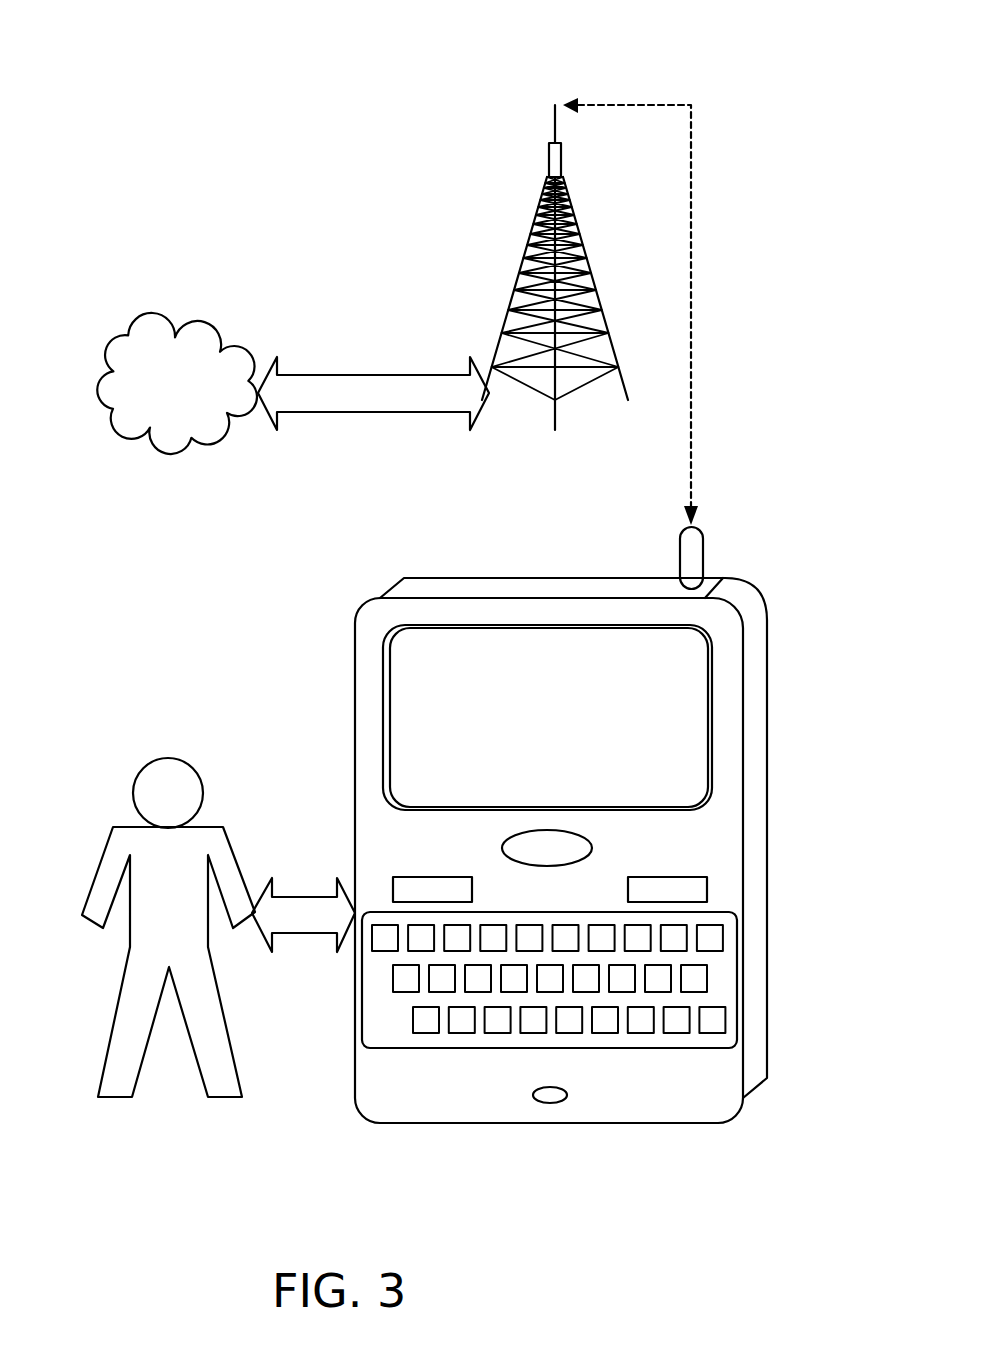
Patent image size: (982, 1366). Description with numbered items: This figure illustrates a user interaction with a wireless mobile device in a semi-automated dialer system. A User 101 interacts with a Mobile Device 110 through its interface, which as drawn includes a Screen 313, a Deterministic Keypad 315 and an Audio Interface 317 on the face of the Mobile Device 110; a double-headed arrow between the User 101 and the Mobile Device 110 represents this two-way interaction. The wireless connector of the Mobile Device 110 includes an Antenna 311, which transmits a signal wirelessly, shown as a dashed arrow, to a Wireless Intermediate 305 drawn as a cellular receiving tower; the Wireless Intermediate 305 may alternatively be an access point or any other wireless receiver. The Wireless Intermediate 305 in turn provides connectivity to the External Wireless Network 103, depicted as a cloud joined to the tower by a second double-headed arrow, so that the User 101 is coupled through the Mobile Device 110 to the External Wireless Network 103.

The wireless intermediate 305 is at (533, 225).
The external wireless network 103 is at (157, 313).
The user 101 is at (212, 823).
The mobile device 110 is at (443, 577).
The antenna 311 is at (680, 546).
The screen 313 is at (713, 705).
The deterministic keypad 315 is at (450, 1047).
The audio interface 317 is at (550, 1103).